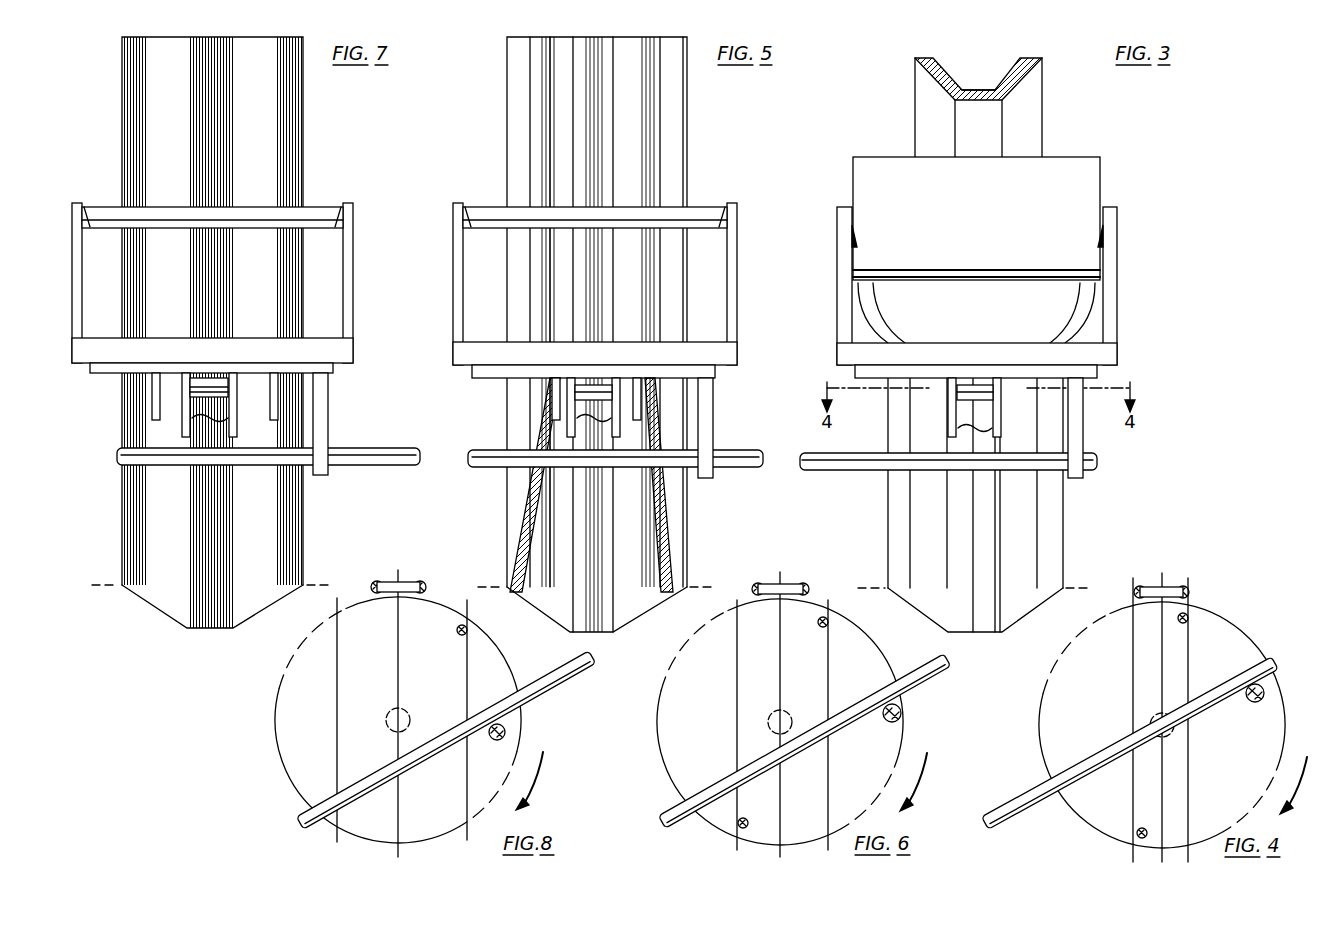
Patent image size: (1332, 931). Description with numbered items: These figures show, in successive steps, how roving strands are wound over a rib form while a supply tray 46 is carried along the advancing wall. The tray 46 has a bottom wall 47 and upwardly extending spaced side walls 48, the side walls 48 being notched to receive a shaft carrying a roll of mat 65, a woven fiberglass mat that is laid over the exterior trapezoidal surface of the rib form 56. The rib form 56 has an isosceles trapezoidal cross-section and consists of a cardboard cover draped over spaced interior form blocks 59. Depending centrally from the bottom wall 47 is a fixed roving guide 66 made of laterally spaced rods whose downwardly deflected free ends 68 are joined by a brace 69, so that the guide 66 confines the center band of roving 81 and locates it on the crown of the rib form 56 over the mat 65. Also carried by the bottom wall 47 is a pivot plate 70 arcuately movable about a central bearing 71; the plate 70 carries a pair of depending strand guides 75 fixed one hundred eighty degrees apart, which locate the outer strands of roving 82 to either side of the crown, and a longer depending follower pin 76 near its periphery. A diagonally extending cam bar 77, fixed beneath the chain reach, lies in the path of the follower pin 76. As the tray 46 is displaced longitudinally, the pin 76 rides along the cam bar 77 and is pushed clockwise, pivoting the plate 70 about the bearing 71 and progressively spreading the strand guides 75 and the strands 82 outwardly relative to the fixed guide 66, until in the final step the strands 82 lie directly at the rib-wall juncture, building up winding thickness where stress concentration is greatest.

In FIG. 7, the supply tray 46 is at (364, 214).
In FIG. 5, the supply tray 46 is at (748, 214).
In FIG. 3, the supply tray 46 is at (1130, 216).
In FIG. 7, the bottom wall 47 is at (353, 348).
In FIG. 5, the bottom wall 47 is at (737, 348).
In FIG. 3, the bottom wall 47 is at (1117, 350).
In FIG. 7, the side walls 48 is at (375, 250).
In FIG. 5, the side walls 48 is at (768, 250).
In FIG. 3, the side walls 48 is at (837, 250).
In FIG. 3, the rib form 56 is at (1042, 90).
In FIG. 3, the form blocks 59 is at (975, 88).
In FIG. 7, the roll of mat 65 is at (303, 122).
In FIG. 5, the roll of mat 65 is at (687, 122).
In FIG. 3, the roll of mat 65 is at (965, 219).
In FIG. 5, the roving guide 66 is at (556, 436).
In FIG. 7, the free ends of the rods 68 is at (210, 429).
In FIG. 5, the free ends of the rods 68 is at (594, 429).
In FIG. 3, the free ends of the rods 68 is at (975, 439).
In FIG. 8, the free ends of the rods 68 is at (398, 563).
In FIG. 6, the free ends of the rods 68 is at (780, 564).
In FIG. 4, the free ends of the rods 68 is at (1161, 567).
In FIG. 7, the brace 69 is at (211, 380).
In FIG. 5, the brace 69 is at (598, 382).
In FIG. 3, the brace 69 is at (975, 383).
In FIG. 7, the pivot plate 70 is at (333, 370).
In FIG. 5, the pivot plate 70 is at (715, 372).
In FIG. 3, the pivot plate 70 is at (1097, 372).
In FIG. 8, the pivot plate 70 is at (375, 720).
In FIG. 6, the pivot plate 70 is at (756, 722).
In FIG. 4, the pivot plate 70 is at (1139, 725).
In FIG. 8, the central bearing 71 is at (379, 711).
In FIG. 6, the central bearing 71 is at (766, 711).
In FIG. 4, the central bearing 71 is at (1139, 714).
In FIG. 7, the strand guides 75 is at (152, 406).
In FIG. 5, the strand guides 75 is at (552, 408).
In FIG. 3, the strand guides 75 is at (953, 413).
In FIG. 8, the strand guides 75 is at (426, 732).
In FIG. 6, the strand guides 75 is at (796, 733).
In FIG. 4, the strand guides 75 is at (1169, 726).
In FIG. 7, the follower pin 76 is at (320, 475).
In FIG. 5, the follower pin 76 is at (705, 478).
In FIG. 3, the follower pin 76 is at (1075, 478).
In FIG. 8, the follower pin 76 is at (525, 728).
In FIG. 6, the follower pin 76 is at (915, 713).
In FIG. 4, the follower pin 76 is at (1283, 692).
In FIG. 7, the cam bar 77 is at (390, 465).
In FIG. 5, the cam bar 77 is at (740, 467).
In FIG. 3, the cam bar 77 is at (1097, 462).
In FIG. 8, the cam bar 77 is at (452, 740).
In FIG. 6, the cam bar 77 is at (815, 741).
In FIG. 4, the cam bar 77 is at (1130, 743).
In FIG. 5, the center band of roving 81 is at (597, 562).
In FIG. 8, the center band of roving 81 is at (415, 713).
In FIG. 5, the outer strands of roving 82 is at (522, 552).
In FIG. 8, the outer strands of roving 82 is at (383, 727).